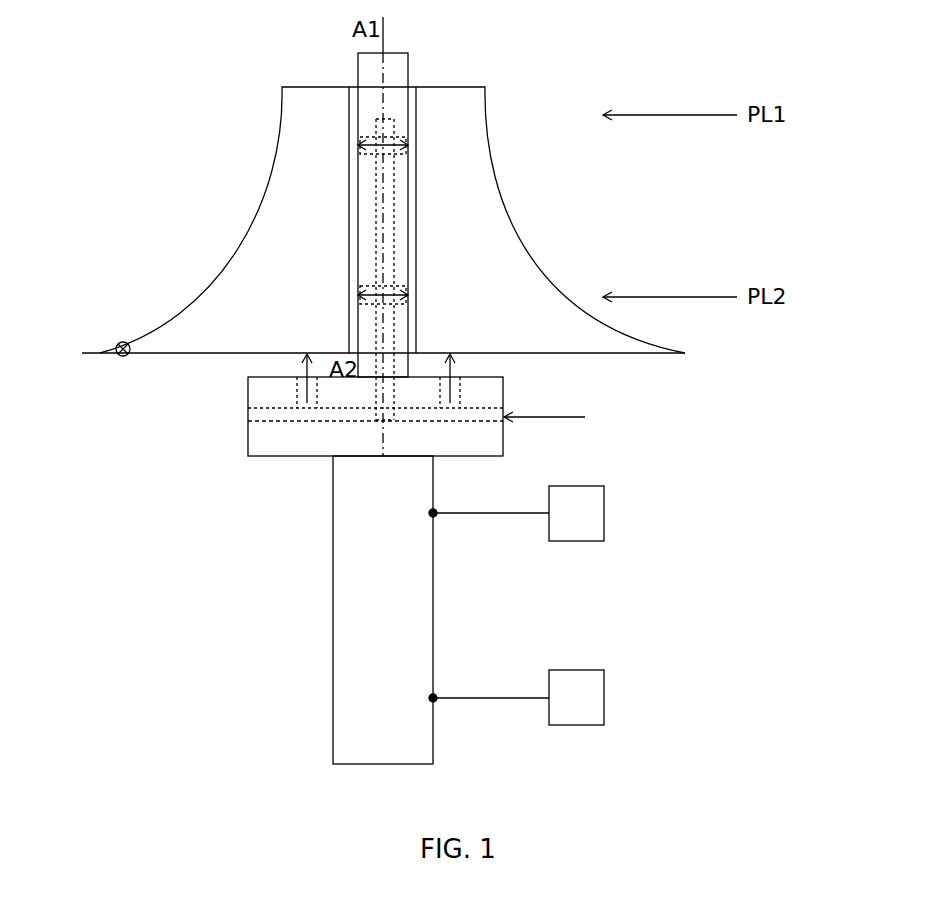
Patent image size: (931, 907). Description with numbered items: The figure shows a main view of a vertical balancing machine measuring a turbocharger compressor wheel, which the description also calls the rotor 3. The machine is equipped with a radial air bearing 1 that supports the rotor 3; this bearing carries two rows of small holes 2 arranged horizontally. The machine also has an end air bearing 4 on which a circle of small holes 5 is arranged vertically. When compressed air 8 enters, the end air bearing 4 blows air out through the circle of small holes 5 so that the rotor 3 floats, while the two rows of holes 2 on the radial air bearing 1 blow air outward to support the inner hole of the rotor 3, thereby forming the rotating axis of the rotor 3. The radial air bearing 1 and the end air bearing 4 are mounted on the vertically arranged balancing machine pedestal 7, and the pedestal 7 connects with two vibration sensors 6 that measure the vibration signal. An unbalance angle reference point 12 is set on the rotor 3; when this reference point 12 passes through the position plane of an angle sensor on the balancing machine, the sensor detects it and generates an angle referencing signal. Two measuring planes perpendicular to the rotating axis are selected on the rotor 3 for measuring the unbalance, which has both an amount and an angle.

The radial air bearing 1 is at (393, 73).
The small holes 2 is at (415, 145).
The rotor 3 is at (277, 262).
The end air bearing 4 is at (273, 403).
The small holes 5 is at (442, 400).
The vibration sensors 6 is at (577, 528).
The balancing machine pedestal 7 is at (367, 630).
The compressed air 8 is at (553, 429).
The unbalance angle reference point 12 is at (120, 337).